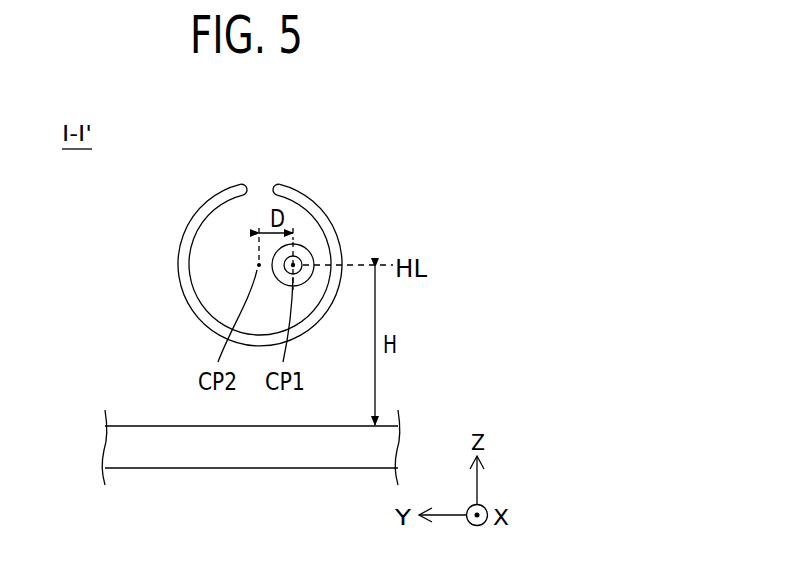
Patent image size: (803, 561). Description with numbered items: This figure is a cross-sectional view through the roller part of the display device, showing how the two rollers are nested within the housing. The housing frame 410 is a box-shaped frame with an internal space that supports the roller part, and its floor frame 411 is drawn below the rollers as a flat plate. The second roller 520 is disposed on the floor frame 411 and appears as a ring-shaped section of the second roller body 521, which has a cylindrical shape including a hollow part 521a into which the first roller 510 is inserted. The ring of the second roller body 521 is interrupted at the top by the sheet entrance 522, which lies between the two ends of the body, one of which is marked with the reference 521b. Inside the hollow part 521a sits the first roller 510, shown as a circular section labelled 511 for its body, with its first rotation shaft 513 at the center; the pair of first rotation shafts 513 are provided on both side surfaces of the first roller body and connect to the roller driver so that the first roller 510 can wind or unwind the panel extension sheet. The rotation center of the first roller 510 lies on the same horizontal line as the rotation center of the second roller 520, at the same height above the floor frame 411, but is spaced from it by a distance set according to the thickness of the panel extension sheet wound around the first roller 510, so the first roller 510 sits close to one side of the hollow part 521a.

The first roller 510 is at (397, 184).
The lamp tube 511 is at (300, 245).
The first rotation shaft 513 is at (300, 263).
The second roller 520 is at (155, 266).
The second roller body 521 is at (182, 238).
The hollow part 521a is at (222, 230).
The second end portion 521b is at (246, 189).
The sheet entrance 522 is at (262, 190).
The floor frame 411 is at (189, 448).
The housing frame 410 is at (251, 471).